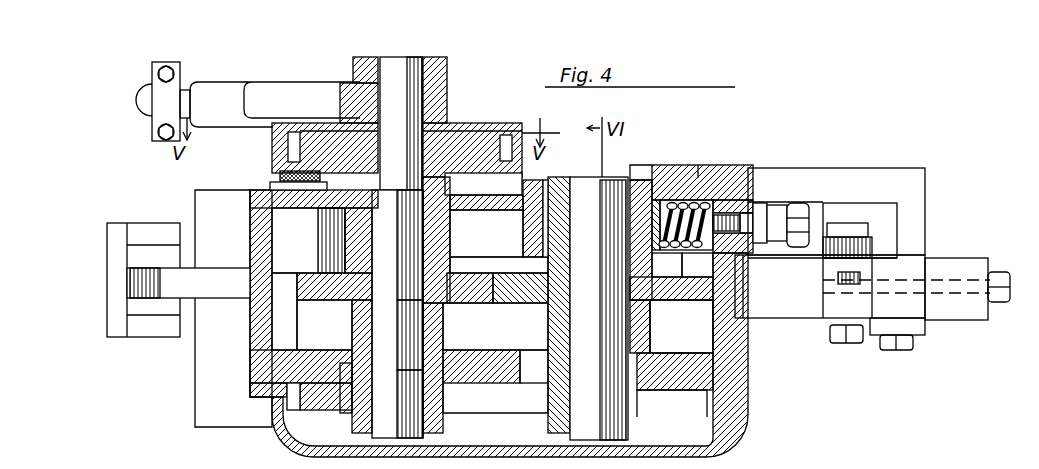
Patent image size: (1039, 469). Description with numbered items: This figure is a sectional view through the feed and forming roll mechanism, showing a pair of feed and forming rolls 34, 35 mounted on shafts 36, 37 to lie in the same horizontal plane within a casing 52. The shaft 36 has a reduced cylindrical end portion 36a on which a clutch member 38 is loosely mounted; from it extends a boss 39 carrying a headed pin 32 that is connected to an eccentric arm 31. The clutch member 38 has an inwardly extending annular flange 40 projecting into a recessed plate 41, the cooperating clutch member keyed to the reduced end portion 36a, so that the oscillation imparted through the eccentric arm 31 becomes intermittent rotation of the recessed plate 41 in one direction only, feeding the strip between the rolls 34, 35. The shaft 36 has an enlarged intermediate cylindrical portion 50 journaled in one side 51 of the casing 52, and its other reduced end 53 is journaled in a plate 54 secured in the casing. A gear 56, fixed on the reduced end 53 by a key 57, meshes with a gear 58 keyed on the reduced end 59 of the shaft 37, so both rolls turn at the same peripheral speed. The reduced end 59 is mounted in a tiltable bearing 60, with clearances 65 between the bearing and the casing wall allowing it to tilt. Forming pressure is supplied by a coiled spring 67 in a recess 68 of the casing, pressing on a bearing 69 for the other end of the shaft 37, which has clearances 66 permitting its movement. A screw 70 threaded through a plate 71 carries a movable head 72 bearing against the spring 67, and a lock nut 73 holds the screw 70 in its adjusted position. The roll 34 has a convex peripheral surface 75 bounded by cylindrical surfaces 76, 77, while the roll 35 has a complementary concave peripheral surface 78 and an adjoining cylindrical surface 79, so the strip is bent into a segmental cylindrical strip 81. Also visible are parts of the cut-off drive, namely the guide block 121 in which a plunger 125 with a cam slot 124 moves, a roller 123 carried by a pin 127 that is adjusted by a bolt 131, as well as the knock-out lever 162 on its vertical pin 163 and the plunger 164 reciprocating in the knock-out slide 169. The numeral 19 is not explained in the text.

The shaft 19 is at (397, 269).
The eccentric arm 31 is at (175, 85).
The headed pin 32 is at (145, 100).
The feed and forming roll 34 is at (499, 241).
The feed and forming roll 35 is at (519, 292).
The shaft 36 is at (400, 67).
The reduced cylindrical end portion 36a is at (420, 102).
The shaft 37 is at (625, 180).
The clutch member 38 is at (448, 120).
The boss 39 is at (231, 98).
The annular flange 40 is at (298, 150).
The recessed plate 41 is at (288, 138).
The enlarged intermediate cylindrical portion 50 is at (400, 245).
The side of casing 51 is at (483, 184).
The casing 52 is at (256, 328).
The reduced end 53 is at (399, 335).
The plate 54 is at (458, 375).
The gear 56 is at (326, 403).
The key 57 is at (399, 404).
The gear 58 is at (652, 405).
The reduced end 59 is at (588, 308).
The tiltable bearing 60 is at (652, 345).
The clearances 65 is at (542, 362).
The clearances 66 is at (548, 190).
The coiled spring 67 is at (725, 190).
The recess 68 is at (703, 182).
The bearing 69 is at (650, 175).
The screw 70 is at (800, 203).
The plate 71 is at (760, 203).
The movable head 72 is at (690, 240).
The lock nut 73 is at (777, 205).
The convex peripheral surface 75 is at (300, 270).
The cylindrical surface 76 is at (302, 272).
The cylindrical surface 77 is at (334, 295).
The concave peripheral surface 78 is at (737, 287).
The cylindrical surface 79 is at (705, 238).
The segmental cylindrical strip 81 is at (470, 250).
The guide block 121 is at (912, 170).
The roller 123 is at (872, 248).
The cam slot 124 is at (848, 233).
The plunger 125 is at (892, 208).
The pin 127 is at (822, 323).
The bolt 131 is at (1000, 272).
The knock-out lever 162 is at (208, 286).
The vertical pin 163 is at (280, 180).
The plunger 164 is at (146, 312).
The knock-out slide 169 is at (112, 262).